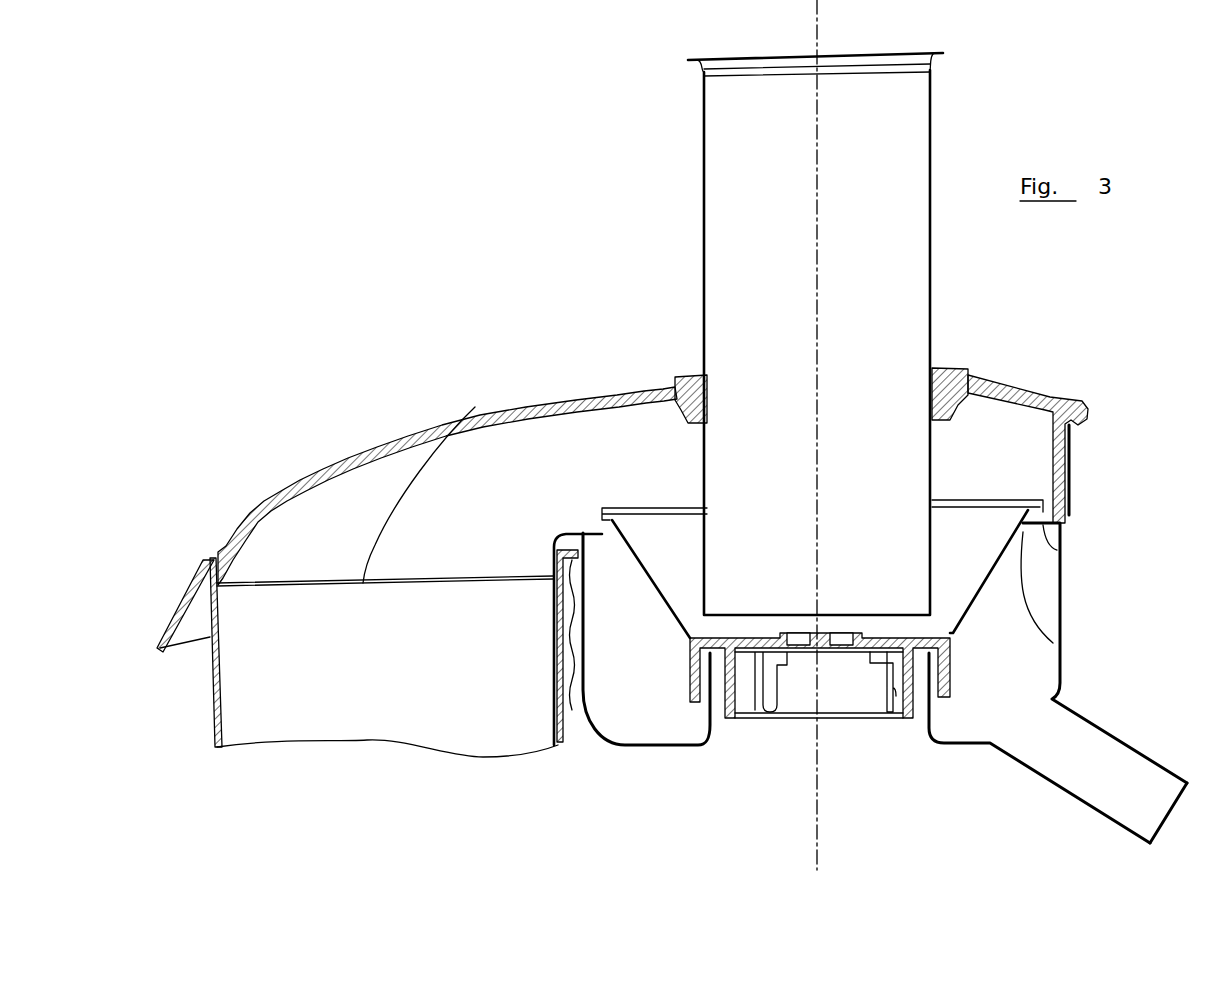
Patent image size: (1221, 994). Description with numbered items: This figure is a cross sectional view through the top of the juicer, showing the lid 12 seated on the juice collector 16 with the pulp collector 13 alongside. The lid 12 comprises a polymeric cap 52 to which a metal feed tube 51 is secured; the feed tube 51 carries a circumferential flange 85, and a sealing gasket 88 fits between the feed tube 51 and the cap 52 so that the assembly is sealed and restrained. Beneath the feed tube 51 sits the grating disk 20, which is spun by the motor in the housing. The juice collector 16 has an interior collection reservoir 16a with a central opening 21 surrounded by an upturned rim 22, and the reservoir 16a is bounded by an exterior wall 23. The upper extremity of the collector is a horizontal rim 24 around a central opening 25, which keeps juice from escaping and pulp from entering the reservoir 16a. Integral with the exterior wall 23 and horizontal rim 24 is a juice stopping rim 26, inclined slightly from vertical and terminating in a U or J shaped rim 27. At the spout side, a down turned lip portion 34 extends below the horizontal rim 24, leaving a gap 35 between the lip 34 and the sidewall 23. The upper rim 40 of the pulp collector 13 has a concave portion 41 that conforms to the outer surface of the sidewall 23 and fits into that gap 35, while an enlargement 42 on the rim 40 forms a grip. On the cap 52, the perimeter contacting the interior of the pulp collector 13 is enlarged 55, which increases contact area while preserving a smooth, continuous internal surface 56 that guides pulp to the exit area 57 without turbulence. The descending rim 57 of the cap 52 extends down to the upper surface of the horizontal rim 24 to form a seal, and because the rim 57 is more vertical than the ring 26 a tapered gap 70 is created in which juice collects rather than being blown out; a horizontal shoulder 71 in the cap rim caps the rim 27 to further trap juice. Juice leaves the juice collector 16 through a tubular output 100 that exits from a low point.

The lid 12 is at (1022, 362).
The pulp collector 13 is at (392, 703).
The juice collector 16 is at (1070, 589).
The collection reservoir 16a is at (668, 662).
The grating disk 20 is at (890, 717).
The central opening 21 is at (745, 748).
The upturned rim 22 is at (697, 705).
The exterior wall 23 is at (588, 625).
The horizontal rim 24 is at (596, 533).
The central opening 25 is at (1063, 642).
The juice stopping rim 26 is at (1077, 463).
The U or J shaped rim 27 is at (1080, 420).
The down turned lip portion 34 is at (548, 560).
The gap 35 is at (560, 747).
The upper rim 40 is at (211, 558).
The concave portion 41 is at (580, 563).
The enlargement 42 is at (178, 592).
The feed tube 51 is at (910, 250).
The cap 52 is at (536, 397).
The enlargement 55 is at (260, 560).
The internal surface 56 is at (338, 484).
The descending rim 57 is at (482, 404).
The gap 70 is at (1073, 488).
The horizontal shoulder 71 is at (1068, 442).
The circumferential flange 85 is at (690, 377).
The sealing gasket 88 is at (960, 403).
The tubular output 100 is at (1088, 755).